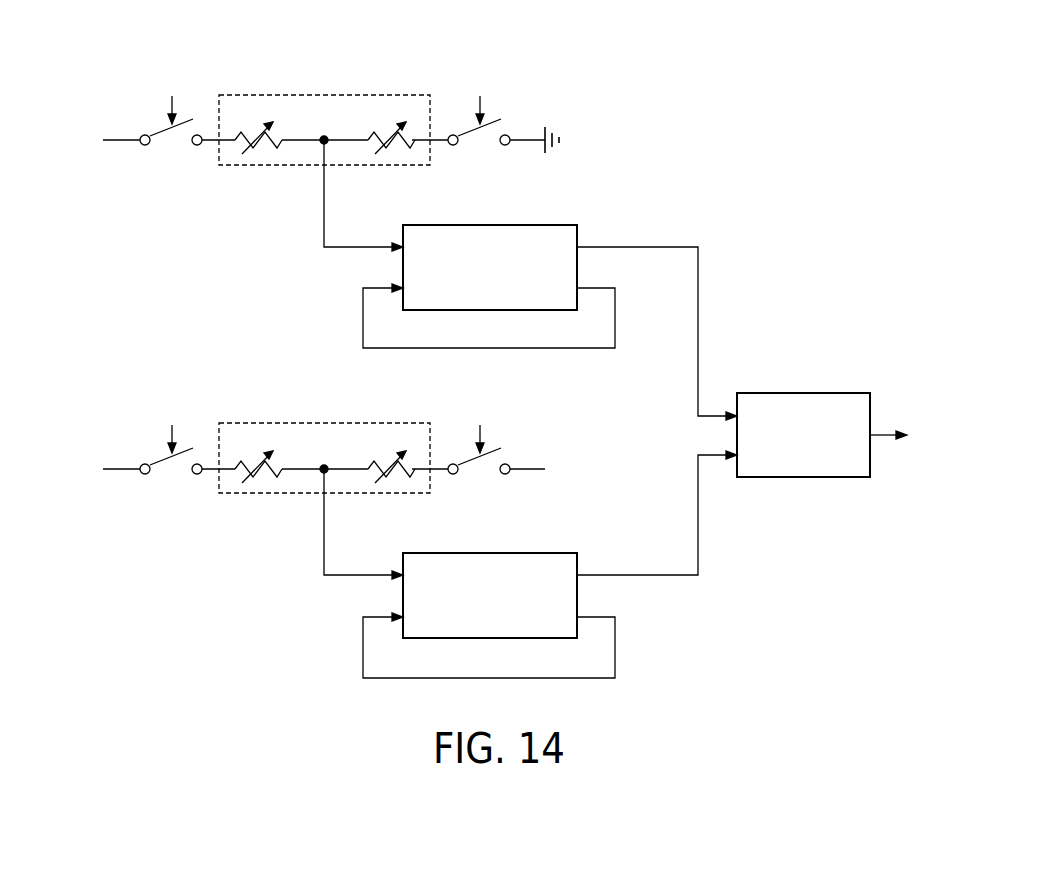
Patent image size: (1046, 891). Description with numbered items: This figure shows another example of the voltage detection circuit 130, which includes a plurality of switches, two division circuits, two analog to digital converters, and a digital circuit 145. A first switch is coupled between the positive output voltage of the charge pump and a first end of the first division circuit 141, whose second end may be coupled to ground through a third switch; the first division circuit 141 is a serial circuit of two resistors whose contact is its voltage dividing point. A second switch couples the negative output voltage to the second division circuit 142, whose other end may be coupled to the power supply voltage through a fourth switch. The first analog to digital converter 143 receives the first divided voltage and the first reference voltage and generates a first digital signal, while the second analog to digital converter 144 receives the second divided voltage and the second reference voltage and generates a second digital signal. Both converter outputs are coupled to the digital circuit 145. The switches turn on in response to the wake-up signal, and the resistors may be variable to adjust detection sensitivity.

The voltage detection circuit 130 is at (73, 87).
The first division circuit 141 is at (325, 95).
The second division circuit 142 is at (325, 423).
The first analog to digital converter 143 is at (541, 225).
The second analog to digital converter 144 is at (541, 553).
The digital circuit 145 is at (801, 392).